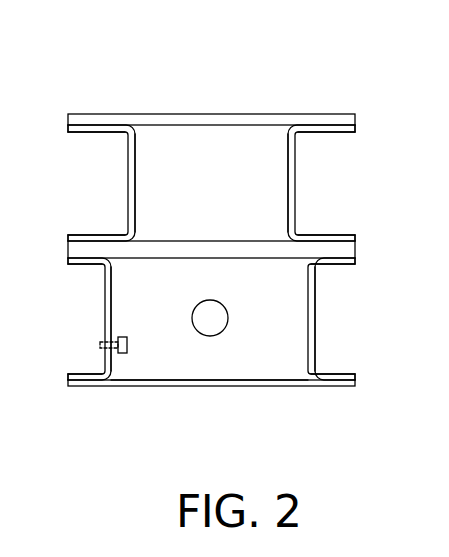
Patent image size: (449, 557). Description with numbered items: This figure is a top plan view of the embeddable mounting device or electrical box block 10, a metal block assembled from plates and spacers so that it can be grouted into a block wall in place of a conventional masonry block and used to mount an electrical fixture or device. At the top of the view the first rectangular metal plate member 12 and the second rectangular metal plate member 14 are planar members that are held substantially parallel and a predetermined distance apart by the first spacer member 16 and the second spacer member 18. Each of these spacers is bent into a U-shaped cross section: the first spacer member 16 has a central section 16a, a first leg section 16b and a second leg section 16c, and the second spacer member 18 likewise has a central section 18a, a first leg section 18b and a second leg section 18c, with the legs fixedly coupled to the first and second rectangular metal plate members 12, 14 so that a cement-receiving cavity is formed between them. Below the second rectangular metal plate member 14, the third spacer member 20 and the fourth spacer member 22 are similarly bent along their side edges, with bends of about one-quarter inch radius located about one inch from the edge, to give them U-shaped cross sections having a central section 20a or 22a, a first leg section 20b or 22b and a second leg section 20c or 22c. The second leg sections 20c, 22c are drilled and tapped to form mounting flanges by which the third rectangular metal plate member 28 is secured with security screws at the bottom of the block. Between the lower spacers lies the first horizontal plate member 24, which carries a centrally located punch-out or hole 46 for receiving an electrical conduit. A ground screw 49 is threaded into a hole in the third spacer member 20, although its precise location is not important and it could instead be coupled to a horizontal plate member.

The embeddable mounting device or electrical box block 10 is at (334, 72).
The first rectangular metal plate member 12 is at (164, 114).
The second rectangular metal plate member 14 is at (223, 241).
The first spacer member 16 is at (106, 183).
The central section 16a is at (102, 132).
The first leg section 16b is at (135, 192).
The second leg section 16c is at (102, 235).
The second spacer member 18 is at (315, 183).
The central section 18a is at (322, 132).
The first leg section 18b is at (288, 198).
The second leg section 18c is at (322, 235).
The third spacer member 20 is at (91, 319).
The central section 20a is at (86, 264).
The first leg section 20b is at (111, 302).
The second leg section 20c is at (86, 375).
The fourth spacer member 22 is at (328, 319).
The central section 22a is at (334, 264).
The first leg section 22b is at (308, 326).
The second leg section 22c is at (334, 375).
The first horizontal plate member 24 is at (170, 370).
The third rectangular metal plate member 28 is at (252, 386).
The punch-out or hole 46 is at (224, 308).
The ground screw 49 is at (130, 354).